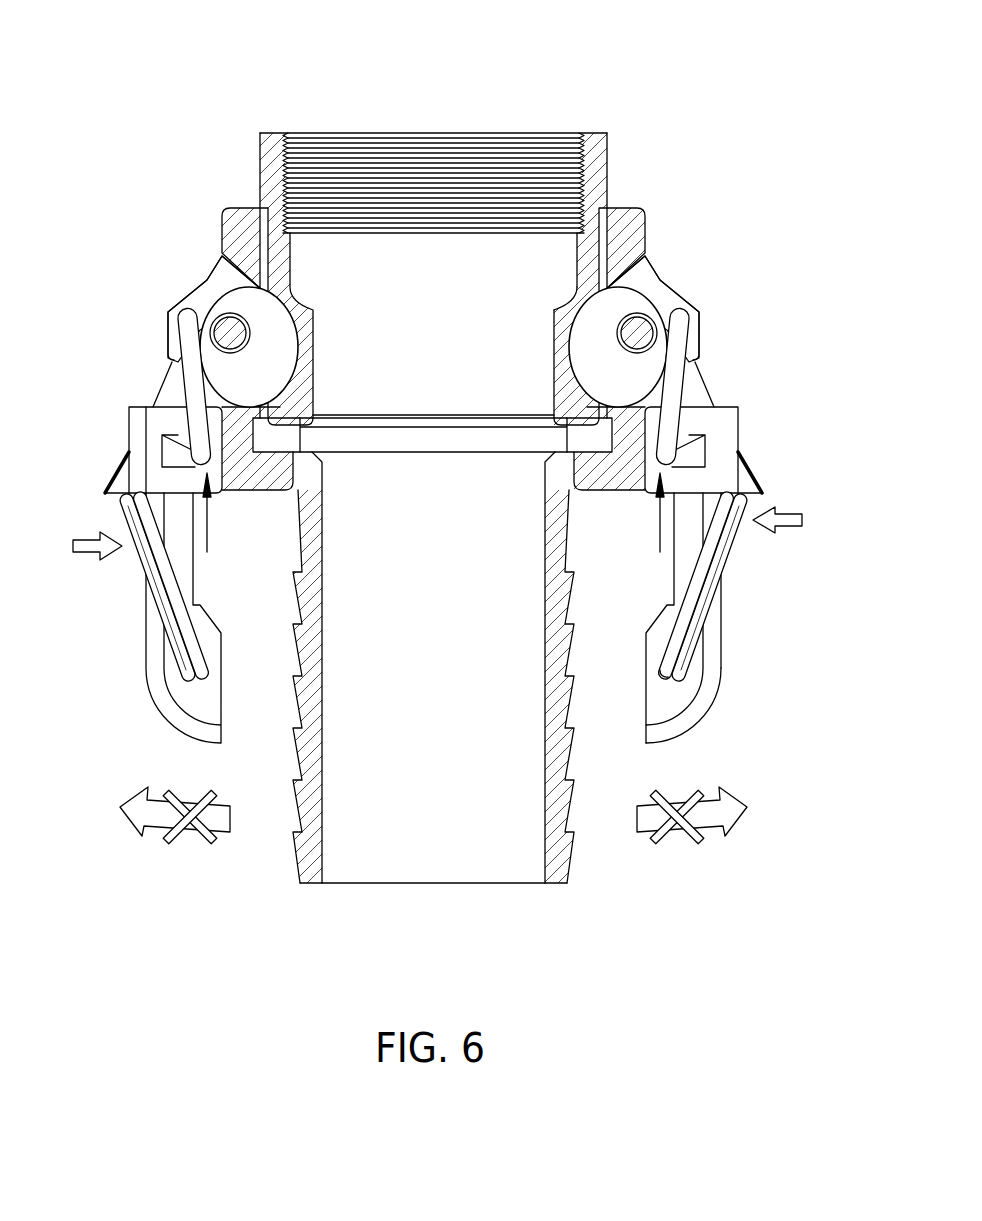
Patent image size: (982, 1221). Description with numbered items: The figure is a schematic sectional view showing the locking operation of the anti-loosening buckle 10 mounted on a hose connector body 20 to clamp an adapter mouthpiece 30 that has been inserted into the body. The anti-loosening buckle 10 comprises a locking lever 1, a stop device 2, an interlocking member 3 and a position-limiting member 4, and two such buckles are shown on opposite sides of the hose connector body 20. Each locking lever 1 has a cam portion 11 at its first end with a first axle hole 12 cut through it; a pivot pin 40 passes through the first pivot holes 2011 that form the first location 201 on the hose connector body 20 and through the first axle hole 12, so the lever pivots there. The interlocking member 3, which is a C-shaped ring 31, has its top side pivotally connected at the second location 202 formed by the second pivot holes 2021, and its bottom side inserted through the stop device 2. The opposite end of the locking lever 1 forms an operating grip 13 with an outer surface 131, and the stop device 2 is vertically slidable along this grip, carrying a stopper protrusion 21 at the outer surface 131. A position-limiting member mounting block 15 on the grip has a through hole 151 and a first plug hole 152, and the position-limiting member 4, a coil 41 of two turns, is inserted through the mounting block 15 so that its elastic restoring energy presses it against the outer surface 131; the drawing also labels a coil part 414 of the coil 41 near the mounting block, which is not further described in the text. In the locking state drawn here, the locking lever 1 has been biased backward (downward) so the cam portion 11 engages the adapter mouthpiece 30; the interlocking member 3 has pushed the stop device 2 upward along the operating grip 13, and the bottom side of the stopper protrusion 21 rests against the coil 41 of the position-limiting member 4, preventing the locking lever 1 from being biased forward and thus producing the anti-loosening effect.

The locking lever 1 is at (521, 311).
The anti-loosening buckle 10 is at (125, 436).
The cam portion 11 is at (593, 307).
The first axle hole 12 is at (617, 333).
The operating grip 13 is at (743, 641).
The outer surface 131 is at (722, 615).
The position-limiting member mounting block 15 is at (739, 686).
The through hole 151 is at (675, 678).
The first plug hole 152 is at (660, 676).
The stop device 2 is at (440, 451).
The hose connector body 20 is at (457, 858).
The first location 201 is at (592, 220).
The first pivot holes 2011 is at (552, 324).
The second location 202 is at (748, 297).
The second pivot holes 2021 is at (680, 317).
The stopper protrusion 21 is at (757, 472).
The interlocking member 3 is at (639, 276).
The C-shaped ring 31 is at (639, 276).
The adapter mouthpiece 30 is at (433, 165).
The position-limiting member 4 is at (659, 627).
The coil 41 is at (659, 627).
The inner rod 414 is at (660, 622).
The pivot pin 40 is at (617, 350).